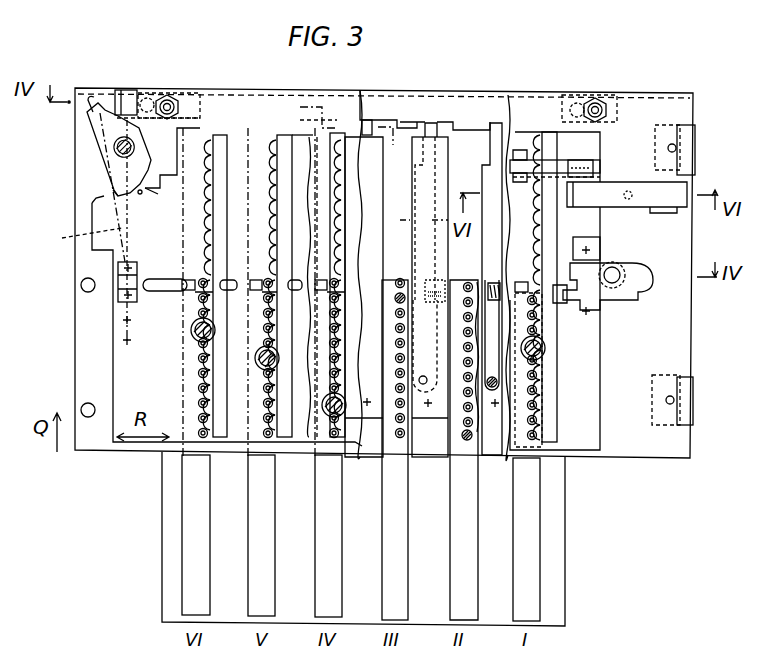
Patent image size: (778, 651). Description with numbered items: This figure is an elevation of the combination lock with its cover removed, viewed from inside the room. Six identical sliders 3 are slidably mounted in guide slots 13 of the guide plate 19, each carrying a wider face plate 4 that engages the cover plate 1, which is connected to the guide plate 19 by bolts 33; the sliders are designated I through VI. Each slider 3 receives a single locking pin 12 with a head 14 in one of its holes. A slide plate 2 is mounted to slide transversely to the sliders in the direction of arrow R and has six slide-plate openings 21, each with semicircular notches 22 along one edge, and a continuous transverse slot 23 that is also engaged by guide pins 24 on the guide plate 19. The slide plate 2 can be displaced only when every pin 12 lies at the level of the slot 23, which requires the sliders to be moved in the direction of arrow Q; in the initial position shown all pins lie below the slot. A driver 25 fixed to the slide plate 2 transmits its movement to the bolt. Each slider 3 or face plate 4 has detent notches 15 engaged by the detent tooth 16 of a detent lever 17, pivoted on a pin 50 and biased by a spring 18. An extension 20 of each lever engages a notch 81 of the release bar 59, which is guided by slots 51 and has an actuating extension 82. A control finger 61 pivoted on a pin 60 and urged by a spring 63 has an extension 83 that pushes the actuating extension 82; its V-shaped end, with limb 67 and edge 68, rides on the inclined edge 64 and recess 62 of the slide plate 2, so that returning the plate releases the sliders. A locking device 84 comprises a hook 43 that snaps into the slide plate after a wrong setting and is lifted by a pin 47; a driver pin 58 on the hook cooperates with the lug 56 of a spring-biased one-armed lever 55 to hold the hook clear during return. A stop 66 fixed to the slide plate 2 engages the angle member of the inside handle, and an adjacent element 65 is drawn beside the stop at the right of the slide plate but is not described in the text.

The cover plate 1 is at (418, 458).
The slide plate 2 is at (578, 450).
The slider 3 is at (383, 345).
The face plate 4 is at (256, 549).
The locking pin 12 is at (394, 299).
The guide slot 13 is at (220, 137).
The head 14 is at (256, 365).
The detent notch 15 is at (478, 408).
The detent tooth 16 is at (478, 287).
The detent lever 17 is at (486, 179).
The spring 18 is at (432, 280).
The guide plate 19 is at (652, 458).
The extension 20 is at (431, 123).
The slide-plate opening 21 is at (285, 135).
The notch 22 is at (200, 368).
The transverse slot 23 is at (162, 279).
The pin 24 is at (186, 280).
The driver 25 is at (118, 282).
The bolt 33 is at (676, 150).
The hook 43 is at (613, 202).
The pin 47 is at (632, 200).
The pivot pin 50 is at (423, 376).
The slot 51 is at (154, 96).
The one-armed lever 55 is at (547, 160).
The lug 56 is at (590, 160).
The driver pin 58 is at (595, 170).
The release bar 59 is at (380, 105).
The pin 60 is at (115, 147).
The control finger 61 is at (128, 171).
The recess 62 is at (140, 194).
The spring 63 is at (82, 238).
The edge 64 is at (104, 198).
The lever 65 is at (600, 308).
The stop 66 is at (560, 305).
The limb 67 is at (113, 190).
The edge 68 is at (158, 195).
The notch 81 is at (250, 122).
The actuating extension 82 is at (127, 90).
The extension 83 is at (92, 100).
The locking device 84 is at (680, 213).